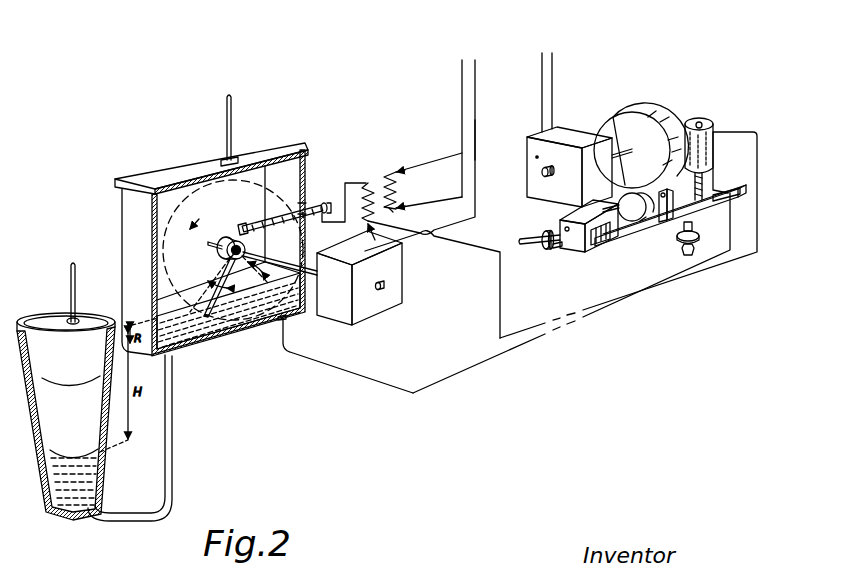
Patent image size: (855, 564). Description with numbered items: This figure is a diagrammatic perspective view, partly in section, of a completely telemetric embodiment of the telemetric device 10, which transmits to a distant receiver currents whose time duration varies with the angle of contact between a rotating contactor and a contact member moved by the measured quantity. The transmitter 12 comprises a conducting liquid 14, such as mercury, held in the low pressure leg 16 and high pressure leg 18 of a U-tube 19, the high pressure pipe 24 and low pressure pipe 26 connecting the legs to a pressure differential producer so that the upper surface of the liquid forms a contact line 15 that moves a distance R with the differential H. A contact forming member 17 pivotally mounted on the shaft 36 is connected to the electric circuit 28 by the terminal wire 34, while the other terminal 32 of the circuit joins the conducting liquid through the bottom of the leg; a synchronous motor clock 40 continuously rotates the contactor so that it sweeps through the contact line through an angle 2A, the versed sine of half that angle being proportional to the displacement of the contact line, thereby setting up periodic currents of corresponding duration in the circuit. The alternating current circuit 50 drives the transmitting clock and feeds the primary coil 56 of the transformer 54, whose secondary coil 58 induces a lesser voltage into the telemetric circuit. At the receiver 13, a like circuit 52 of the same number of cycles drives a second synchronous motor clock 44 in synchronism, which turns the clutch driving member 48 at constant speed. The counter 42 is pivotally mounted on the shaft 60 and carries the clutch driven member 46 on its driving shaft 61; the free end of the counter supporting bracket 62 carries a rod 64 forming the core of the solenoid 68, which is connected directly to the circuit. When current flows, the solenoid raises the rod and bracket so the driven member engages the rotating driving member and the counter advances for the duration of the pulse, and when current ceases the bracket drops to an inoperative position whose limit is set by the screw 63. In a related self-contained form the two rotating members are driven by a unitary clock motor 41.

The telemetric device 10 is at (441, 54).
The transmitter 12 is at (114, 243).
The receiver 13 is at (625, 248).
The conducting liquid 14 is at (276, 302).
The contact line 15 is at (180, 297).
The low pressure leg 16 is at (240, 333).
The contact forming member 17 is at (216, 270).
The high pressure leg 18 is at (55, 515).
The U-tube 19 is at (153, 513).
The high pressure pipe 24 is at (71, 291).
The low pressure pipe 26 is at (232, 134).
The electric circuit 28 is at (510, 347).
The circuit terminal 32 is at (327, 365).
The terminal wire 34 is at (333, 215).
The shaft 36 is at (308, 262).
The synchronous motor clock 40 is at (379, 308).
The unitary clock motor 41 is at (100, 483).
The counter 42 is at (602, 245).
The synchronous motor clock 44 is at (557, 195).
The clutch driven member 46 is at (634, 215).
The clutch driving member 48 is at (660, 121).
The transmitter supply circuit 50 is at (472, 138).
The receiver supply circuit 52 is at (551, 110).
The transformer 54 is at (390, 210).
The primary coil 56 is at (398, 193).
The secondary coil 58 is at (368, 182).
The shaft 60 is at (568, 248).
The driving shaft 61 is at (607, 205).
The counter supporting bracket 62 is at (680, 220).
The screw 63 is at (698, 236).
The rod 64 is at (718, 200).
The solenoid 68 is at (714, 126).
The angle of contact 2A is at (220, 300).